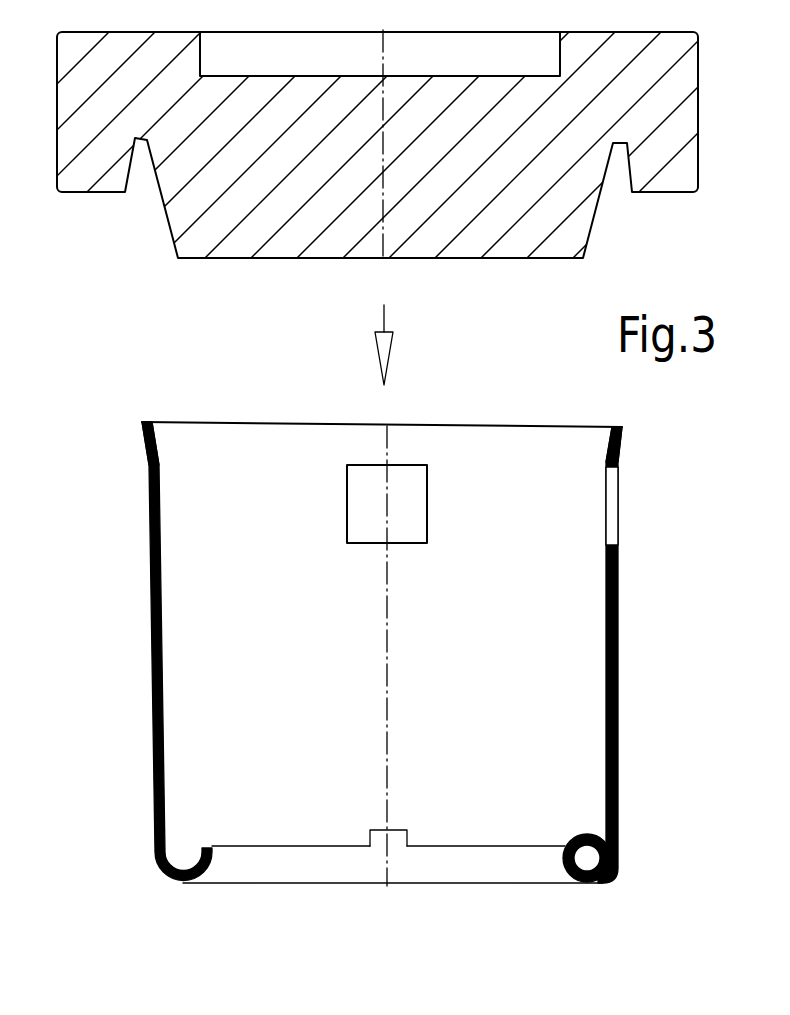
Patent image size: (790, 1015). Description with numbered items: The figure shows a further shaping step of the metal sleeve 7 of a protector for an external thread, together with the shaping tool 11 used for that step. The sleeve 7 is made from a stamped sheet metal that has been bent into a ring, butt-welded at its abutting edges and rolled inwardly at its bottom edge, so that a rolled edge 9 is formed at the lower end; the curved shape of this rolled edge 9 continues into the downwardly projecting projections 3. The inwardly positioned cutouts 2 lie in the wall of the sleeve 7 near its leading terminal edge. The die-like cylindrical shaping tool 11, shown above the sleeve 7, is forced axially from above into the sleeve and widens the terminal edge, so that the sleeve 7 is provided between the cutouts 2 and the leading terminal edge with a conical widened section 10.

The cutouts 2 is at (606, 488).
The projections 3 is at (402, 830).
The sleeve 7 is at (642, 638).
The rolled edge 9 is at (470, 870).
The conical widened section 10 is at (143, 437).
The shaping tool 11 is at (112, 256).